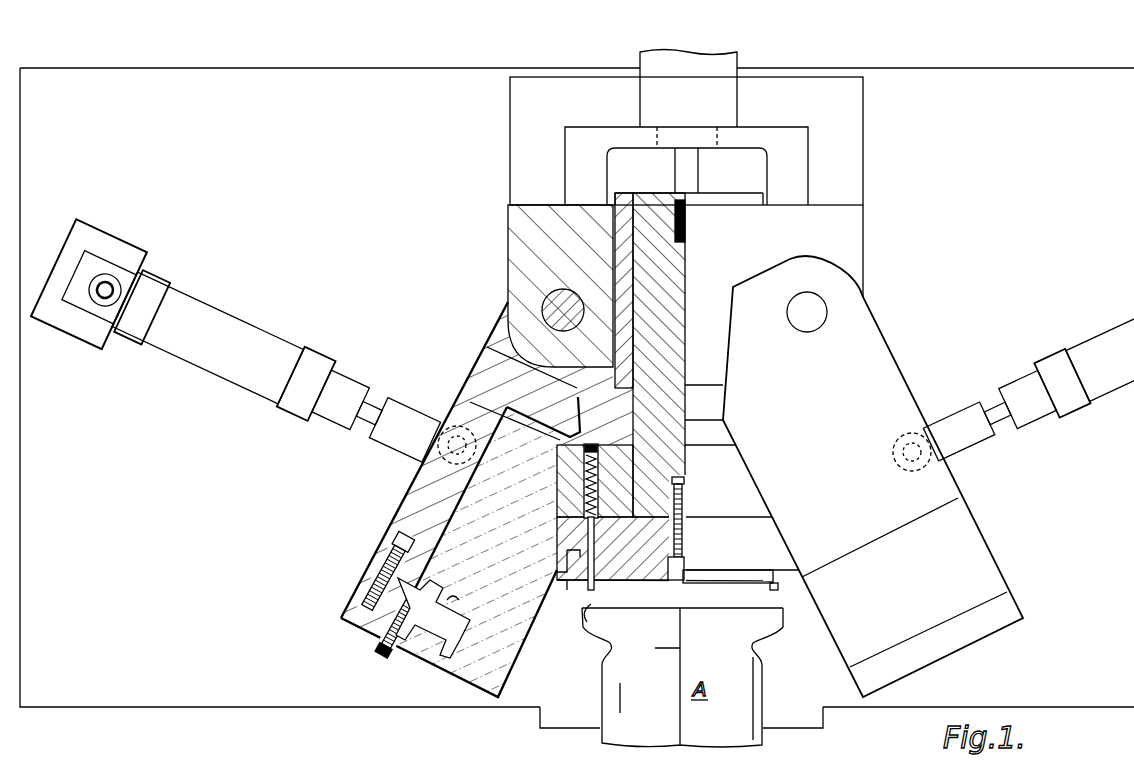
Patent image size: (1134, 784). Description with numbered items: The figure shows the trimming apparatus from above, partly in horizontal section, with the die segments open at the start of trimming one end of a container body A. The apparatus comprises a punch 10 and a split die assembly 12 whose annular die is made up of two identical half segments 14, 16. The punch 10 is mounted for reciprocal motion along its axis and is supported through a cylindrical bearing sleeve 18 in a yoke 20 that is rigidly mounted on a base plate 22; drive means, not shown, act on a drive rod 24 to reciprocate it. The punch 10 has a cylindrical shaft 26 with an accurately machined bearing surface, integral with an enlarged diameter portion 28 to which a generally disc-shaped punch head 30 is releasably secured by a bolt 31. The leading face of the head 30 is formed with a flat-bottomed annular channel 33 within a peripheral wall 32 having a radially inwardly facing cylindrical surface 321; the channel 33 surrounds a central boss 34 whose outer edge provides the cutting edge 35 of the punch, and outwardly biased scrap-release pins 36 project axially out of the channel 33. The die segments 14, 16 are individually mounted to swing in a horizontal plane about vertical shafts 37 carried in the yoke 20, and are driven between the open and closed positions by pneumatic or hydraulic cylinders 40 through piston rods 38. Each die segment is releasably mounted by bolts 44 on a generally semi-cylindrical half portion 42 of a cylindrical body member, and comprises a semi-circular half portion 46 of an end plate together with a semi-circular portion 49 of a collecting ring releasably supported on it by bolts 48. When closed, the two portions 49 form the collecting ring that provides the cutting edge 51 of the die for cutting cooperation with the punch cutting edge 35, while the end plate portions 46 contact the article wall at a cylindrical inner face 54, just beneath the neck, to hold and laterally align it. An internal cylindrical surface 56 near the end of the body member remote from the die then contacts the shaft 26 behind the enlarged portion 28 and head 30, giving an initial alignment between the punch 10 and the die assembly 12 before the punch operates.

The punch 10 is at (620, 472).
The split die assembly 12 is at (885, 350).
The die half segment 14 is at (341, 618).
The die half segment 16 is at (1012, 629).
The cylindrical bearing sleeve 18 is at (621, 230).
The yoke 20 is at (528, 238).
The base plate 22 is at (389, 138).
The drive rod 24 is at (689, 181).
The cylindrical shaft 26 is at (655, 332).
The enlarged diameter portion 28 is at (557, 507).
The punch head 30 is at (684, 490).
The bolt 31 is at (687, 564).
The peripheral wall 32 is at (560, 566).
The radially inwardly facing cylindrical surface 321 is at (560, 562).
The annular channel 33 is at (567, 551).
The central boss 34 is at (630, 583).
The cutting edge 35 is at (586, 613).
The scrap-release pins 36 is at (558, 590).
The vertical shaft 37 is at (548, 300).
The piston rod 38 is at (376, 402).
The cylinder 40 is at (237, 330).
The semi-cylindrical half portion 42 is at (399, 508).
The bolt 44 is at (377, 571).
The semi-circular half portion of end plate 46 is at (404, 656).
The bolt 48 is at (383, 644).
The semi-circular portion of collecting ring 49 is at (454, 602).
The cutting edge 51 is at (447, 612).
The cylindrical inner face 54 is at (458, 668).
The internal cylindrical surface 56 is at (566, 453).